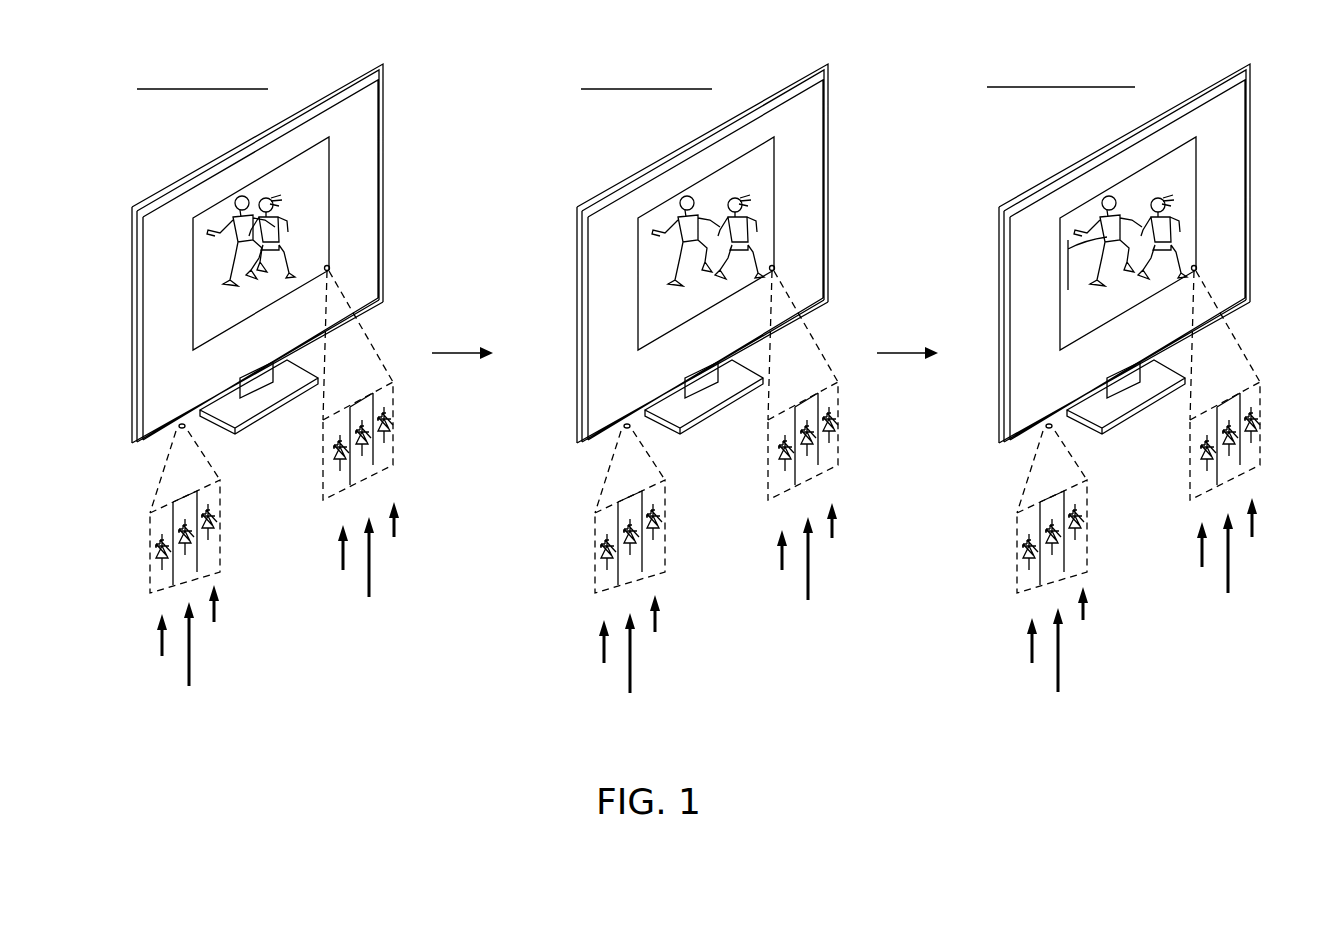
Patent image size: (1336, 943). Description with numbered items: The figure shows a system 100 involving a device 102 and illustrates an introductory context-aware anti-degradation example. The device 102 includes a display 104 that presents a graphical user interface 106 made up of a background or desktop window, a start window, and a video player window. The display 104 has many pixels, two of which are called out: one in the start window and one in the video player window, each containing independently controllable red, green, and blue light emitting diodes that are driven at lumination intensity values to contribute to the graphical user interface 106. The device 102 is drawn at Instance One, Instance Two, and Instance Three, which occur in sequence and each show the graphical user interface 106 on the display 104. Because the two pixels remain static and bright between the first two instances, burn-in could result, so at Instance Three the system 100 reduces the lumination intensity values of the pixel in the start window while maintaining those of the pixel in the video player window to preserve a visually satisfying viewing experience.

The system 100 is at (521, 54).
The device 102 is at (700, 251).
The display 104 is at (700, 251).
The graphical user interface 106 is at (372, 244).